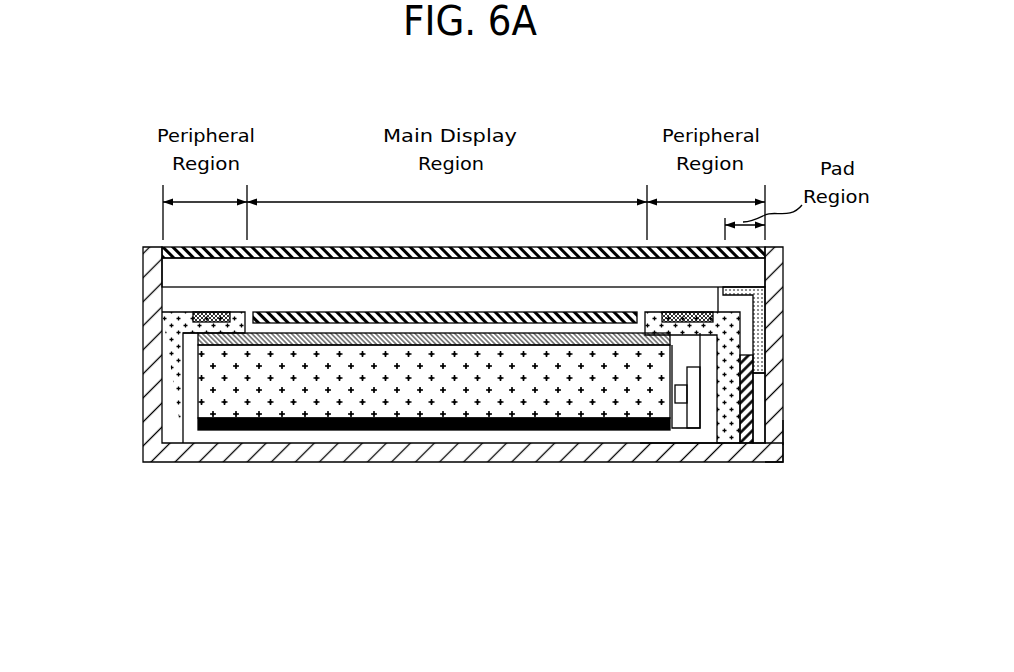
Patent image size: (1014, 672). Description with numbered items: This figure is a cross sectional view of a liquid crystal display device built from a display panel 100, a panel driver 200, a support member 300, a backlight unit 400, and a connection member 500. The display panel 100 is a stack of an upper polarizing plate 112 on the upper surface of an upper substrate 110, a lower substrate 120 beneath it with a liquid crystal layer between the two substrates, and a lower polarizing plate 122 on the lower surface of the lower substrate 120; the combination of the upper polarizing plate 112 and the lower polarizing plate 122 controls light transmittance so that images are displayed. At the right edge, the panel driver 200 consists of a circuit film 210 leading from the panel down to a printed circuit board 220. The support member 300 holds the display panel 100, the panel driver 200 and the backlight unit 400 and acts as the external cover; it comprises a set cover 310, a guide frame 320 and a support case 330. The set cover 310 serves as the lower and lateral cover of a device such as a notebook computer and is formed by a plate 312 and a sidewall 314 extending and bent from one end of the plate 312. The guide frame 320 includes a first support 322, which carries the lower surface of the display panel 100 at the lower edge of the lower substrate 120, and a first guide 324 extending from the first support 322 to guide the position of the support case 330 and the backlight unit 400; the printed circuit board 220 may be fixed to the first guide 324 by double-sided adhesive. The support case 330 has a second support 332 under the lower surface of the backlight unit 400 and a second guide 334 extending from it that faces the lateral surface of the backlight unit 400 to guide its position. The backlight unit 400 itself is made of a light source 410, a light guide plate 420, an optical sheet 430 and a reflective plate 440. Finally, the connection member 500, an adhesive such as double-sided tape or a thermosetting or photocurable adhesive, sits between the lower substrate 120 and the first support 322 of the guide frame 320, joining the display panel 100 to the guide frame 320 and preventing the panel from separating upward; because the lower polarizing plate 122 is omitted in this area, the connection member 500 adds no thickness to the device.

The display panel 100 is at (395, 338).
The upper polarizing plate 112 is at (170, 255).
The upper substrate 110 is at (170, 274).
The lower substrate 120 is at (168, 297).
The lower polarizing plate 122 is at (161, 377).
The panel driver 200 is at (519, 354).
The circuit film 210 is at (763, 328).
The printed circuit board 220 is at (755, 395).
The support member 300 is at (749, 456).
The set cover 310 is at (822, 489).
The plate 312 is at (782, 462).
The sidewall 314 is at (785, 432).
The guide frame 320 is at (715, 435).
The first support 322 is at (727, 442).
The first guide 324 is at (750, 443).
The support case 330 is at (669, 445).
The second support 332 is at (657, 443).
The second guide 334 is at (708, 417).
The backlight unit 400 is at (449, 444).
The light source 410 is at (675, 394).
The light guide plate 420 is at (355, 405).
The optical sheet 430 is at (308, 344).
The reflective plate 440 is at (396, 424).
The connection member 500 is at (200, 318).